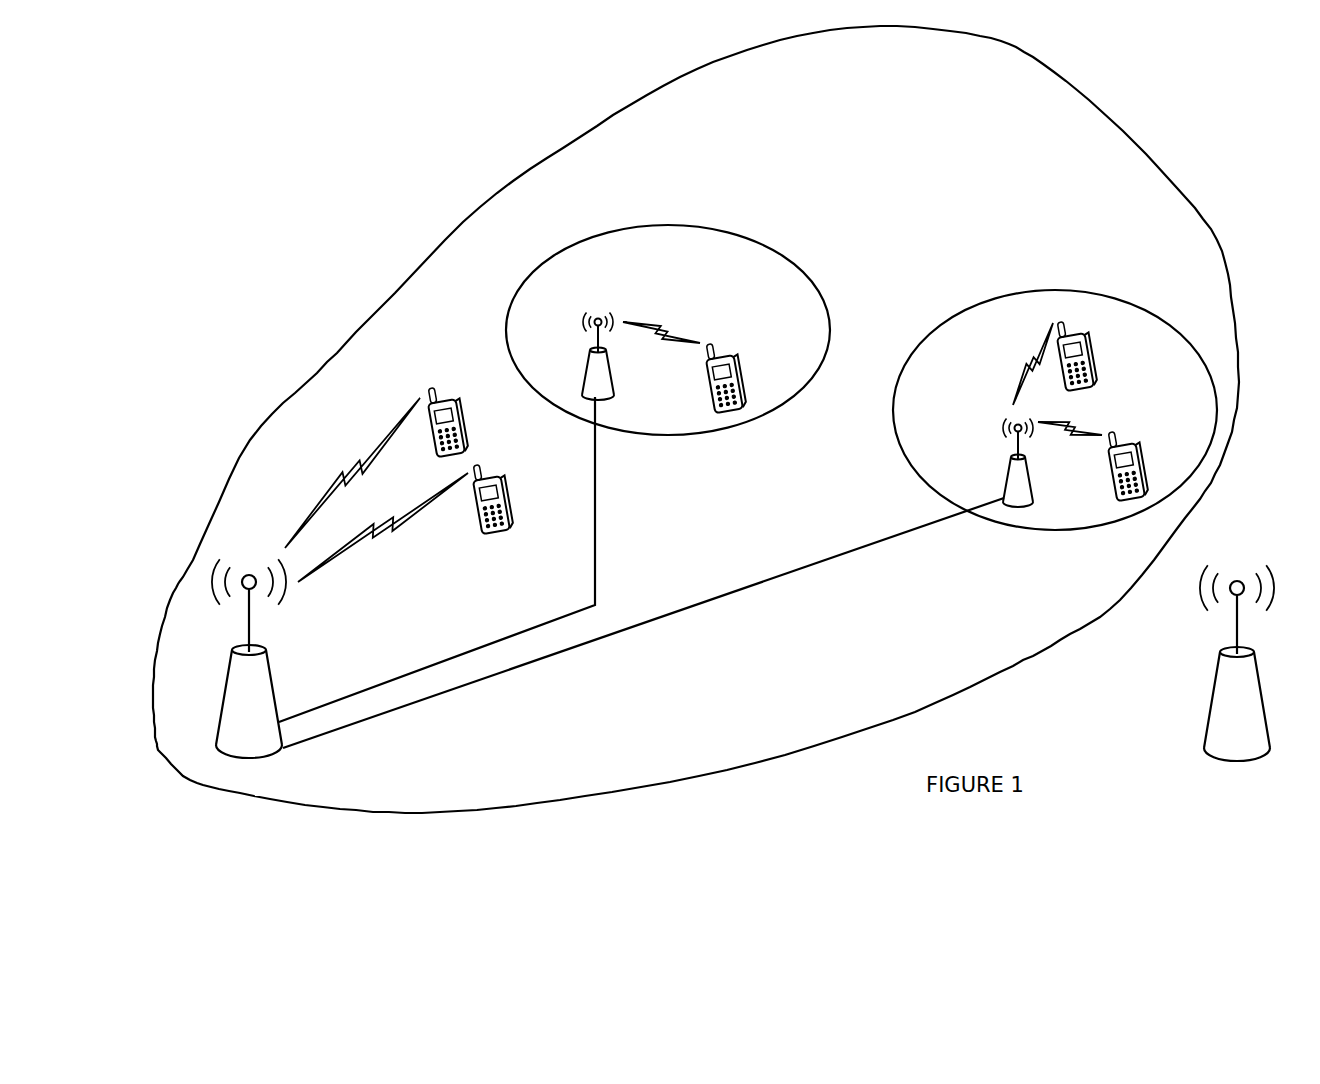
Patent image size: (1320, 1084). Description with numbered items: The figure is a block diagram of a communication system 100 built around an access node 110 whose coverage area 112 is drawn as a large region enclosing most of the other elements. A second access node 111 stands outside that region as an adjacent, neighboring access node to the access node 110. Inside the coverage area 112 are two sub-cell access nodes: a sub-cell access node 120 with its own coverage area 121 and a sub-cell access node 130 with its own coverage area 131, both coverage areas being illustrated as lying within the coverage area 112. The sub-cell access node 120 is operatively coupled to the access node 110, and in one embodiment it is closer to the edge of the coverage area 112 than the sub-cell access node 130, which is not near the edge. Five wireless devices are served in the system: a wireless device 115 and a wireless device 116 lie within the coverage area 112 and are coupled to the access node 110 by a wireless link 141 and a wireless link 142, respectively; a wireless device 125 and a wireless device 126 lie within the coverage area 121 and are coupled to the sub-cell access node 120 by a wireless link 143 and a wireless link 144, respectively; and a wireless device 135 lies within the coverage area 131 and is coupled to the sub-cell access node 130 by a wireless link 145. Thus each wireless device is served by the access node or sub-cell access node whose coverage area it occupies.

The communication system 100 is at (193, 83).
The access node 110 is at (259, 754).
The access node 111 is at (1208, 737).
The coverage area 112 is at (933, 134).
The wireless device 115 is at (452, 400).
The wireless device 116 is at (503, 478).
The sub-cell access node 120 is at (1023, 492).
The coverage area 121 is at (995, 520).
The wireless device 125 is at (1127, 450).
The wireless device 126 is at (1090, 345).
The sub-cell access node 130 is at (611, 393).
The coverage area 131 is at (683, 440).
The wireless device 135 is at (727, 356).
The wireless link 141 is at (380, 447).
The wireless link 142 is at (383, 538).
The wireless link 143 is at (1068, 424).
The wireless link 144 is at (1025, 362).
The wireless link 145 is at (665, 324).